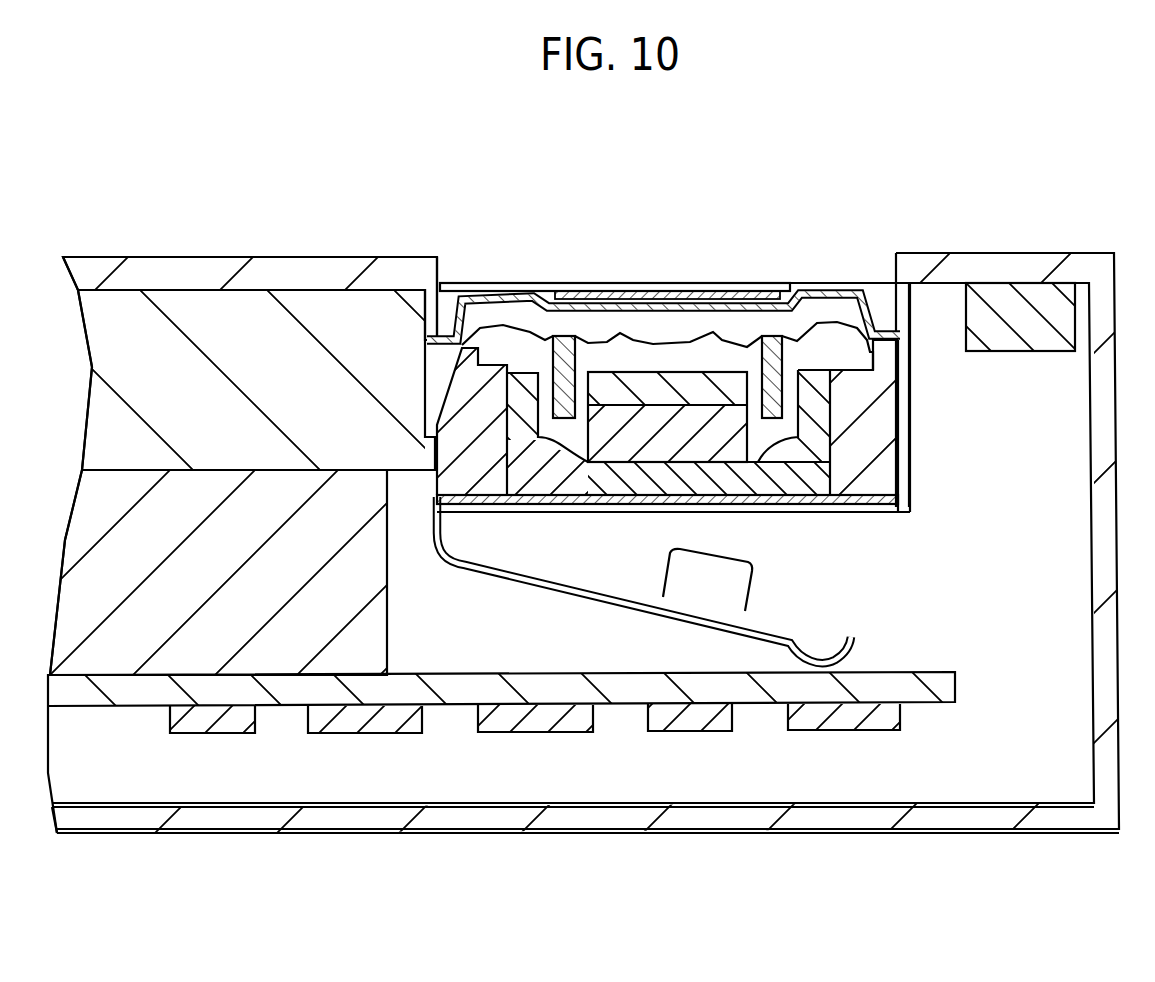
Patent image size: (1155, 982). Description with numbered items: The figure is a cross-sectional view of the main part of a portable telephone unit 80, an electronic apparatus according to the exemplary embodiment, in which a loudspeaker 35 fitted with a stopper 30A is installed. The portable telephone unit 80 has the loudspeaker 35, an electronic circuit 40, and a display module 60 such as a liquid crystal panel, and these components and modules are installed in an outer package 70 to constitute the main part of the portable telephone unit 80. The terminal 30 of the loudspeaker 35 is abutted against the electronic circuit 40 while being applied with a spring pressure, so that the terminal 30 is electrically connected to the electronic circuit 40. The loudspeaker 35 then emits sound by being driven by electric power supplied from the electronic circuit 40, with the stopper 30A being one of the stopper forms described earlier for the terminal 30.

The terminal 30 is at (630, 603).
The stopper 30A is at (715, 570).
The loudspeaker 35 is at (680, 266).
The electronic circuit 40 is at (923, 687).
The display module 60 is at (205, 305).
The outer package 70 is at (373, 823).
The portable telephone unit 80 is at (394, 242).